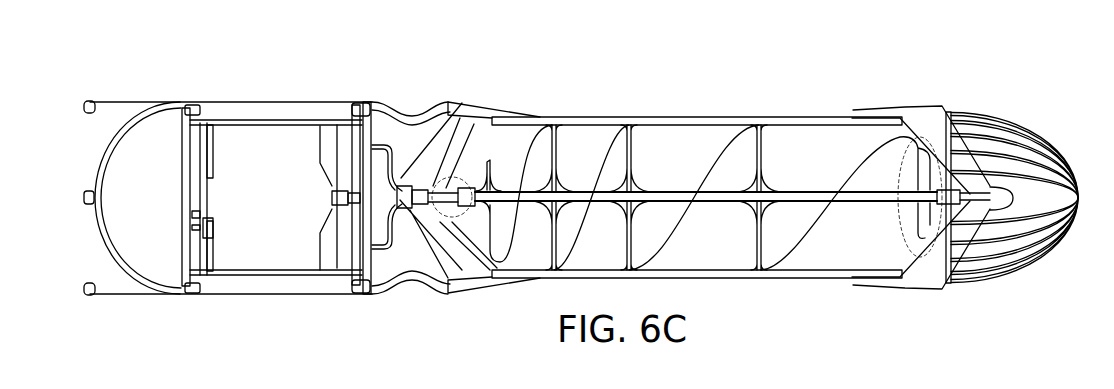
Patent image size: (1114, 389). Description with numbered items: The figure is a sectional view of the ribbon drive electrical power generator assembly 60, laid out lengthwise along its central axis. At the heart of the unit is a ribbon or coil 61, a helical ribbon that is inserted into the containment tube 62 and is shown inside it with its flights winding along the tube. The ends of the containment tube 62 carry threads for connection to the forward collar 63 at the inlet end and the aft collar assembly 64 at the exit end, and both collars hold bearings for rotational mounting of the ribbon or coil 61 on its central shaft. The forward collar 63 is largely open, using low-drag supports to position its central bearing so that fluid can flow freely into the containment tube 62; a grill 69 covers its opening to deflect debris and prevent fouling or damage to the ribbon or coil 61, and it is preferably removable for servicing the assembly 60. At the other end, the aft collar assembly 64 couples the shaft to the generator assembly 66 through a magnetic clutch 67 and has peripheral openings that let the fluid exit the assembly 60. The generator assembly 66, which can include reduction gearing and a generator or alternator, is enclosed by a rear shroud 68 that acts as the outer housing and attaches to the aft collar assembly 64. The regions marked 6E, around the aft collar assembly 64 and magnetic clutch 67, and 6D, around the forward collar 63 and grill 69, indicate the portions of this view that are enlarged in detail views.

The ribbon drive electrical power generator assembly 60 is at (645, 68).
The ribbon or coil 61 is at (855, 163).
The containment tube 62 is at (695, 117).
The forward collar 63 is at (918, 106).
The aft collar assembly 64 is at (477, 107).
The generator assembly 66 is at (314, 118).
The magnetic clutch 67 is at (400, 142).
The rear shroud 68 is at (262, 101).
The grill 69 is at (1022, 117).
The detail view 6E is at (443, 218).
The detail view 6D is at (983, 255).